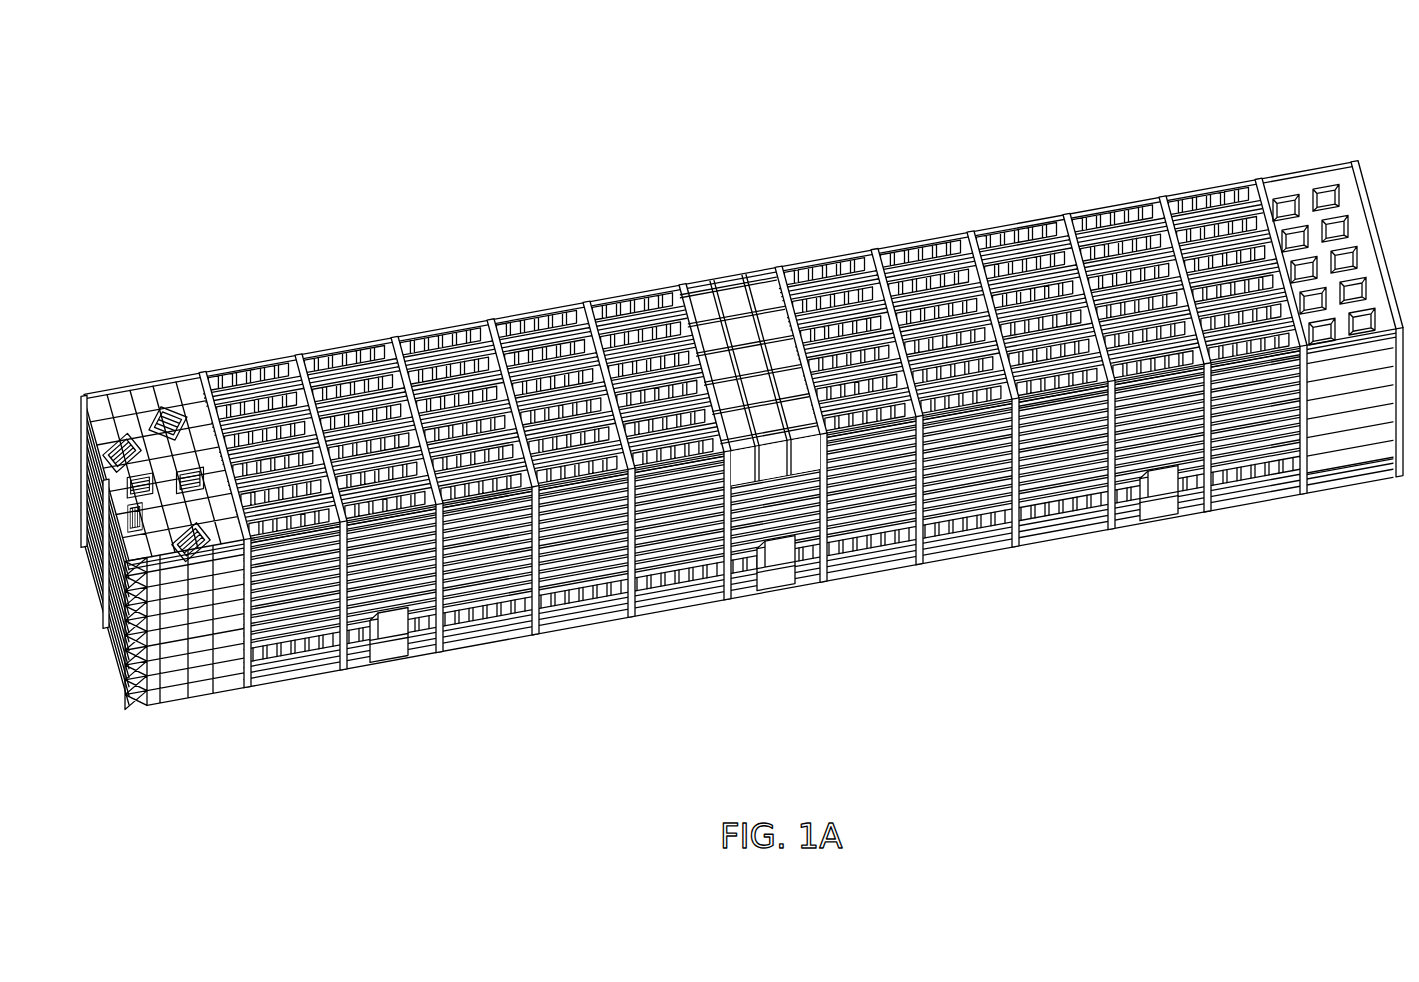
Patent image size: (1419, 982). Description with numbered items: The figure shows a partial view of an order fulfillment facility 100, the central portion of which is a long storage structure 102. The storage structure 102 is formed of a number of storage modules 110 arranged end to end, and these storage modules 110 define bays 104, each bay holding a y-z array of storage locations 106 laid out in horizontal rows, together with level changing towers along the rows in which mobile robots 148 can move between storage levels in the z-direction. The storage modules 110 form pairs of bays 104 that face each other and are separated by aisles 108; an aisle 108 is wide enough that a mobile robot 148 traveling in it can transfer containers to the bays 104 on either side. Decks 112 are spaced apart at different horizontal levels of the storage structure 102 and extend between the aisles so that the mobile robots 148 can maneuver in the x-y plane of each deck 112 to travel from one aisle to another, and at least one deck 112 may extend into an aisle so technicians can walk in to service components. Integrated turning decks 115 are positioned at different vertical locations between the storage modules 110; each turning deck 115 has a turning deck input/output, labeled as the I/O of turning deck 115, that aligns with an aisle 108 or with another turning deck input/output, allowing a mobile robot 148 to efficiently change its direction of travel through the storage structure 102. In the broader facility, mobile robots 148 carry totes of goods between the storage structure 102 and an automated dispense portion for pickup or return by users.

The order fulfillment facility 100 is at (430, 122).
The storage structure 102 is at (537, 312).
The bays 104 is at (228, 368).
The storage locations 106 is at (262, 380).
The aisles 108 is at (288, 385).
The storage modules 110 is at (292, 680).
The decks 112 is at (85, 520).
The turning decks 115 is at (768, 275).
The mobile robots 148 is at (118, 440).